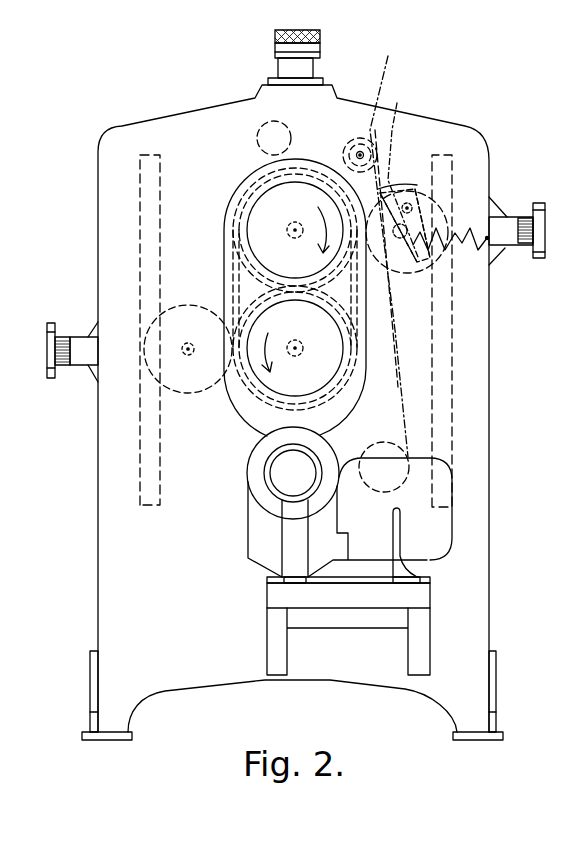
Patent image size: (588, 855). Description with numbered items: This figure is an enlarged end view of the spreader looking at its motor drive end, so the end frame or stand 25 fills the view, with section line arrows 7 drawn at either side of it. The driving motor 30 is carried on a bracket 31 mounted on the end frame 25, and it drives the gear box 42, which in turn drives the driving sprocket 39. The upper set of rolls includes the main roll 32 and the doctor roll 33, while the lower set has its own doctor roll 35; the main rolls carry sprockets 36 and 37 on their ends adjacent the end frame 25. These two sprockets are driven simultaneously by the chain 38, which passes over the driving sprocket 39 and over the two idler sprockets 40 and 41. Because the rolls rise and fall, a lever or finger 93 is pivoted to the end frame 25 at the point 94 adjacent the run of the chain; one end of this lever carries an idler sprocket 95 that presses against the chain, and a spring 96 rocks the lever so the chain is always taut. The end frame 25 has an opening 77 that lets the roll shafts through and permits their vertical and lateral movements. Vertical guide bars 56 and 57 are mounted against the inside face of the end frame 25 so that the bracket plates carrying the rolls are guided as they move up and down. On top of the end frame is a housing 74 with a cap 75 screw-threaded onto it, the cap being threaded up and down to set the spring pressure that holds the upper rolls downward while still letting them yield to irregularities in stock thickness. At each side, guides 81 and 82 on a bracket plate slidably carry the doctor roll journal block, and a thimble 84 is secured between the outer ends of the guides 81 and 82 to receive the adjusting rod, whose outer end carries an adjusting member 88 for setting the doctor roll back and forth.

The section line 7- 7 is at (65, 105).
The end frame 25 is at (292, 412).
The driving motor 30 is at (280, 476).
The bracket 31 is at (290, 595).
The main roll 32 is at (250, 173).
The doctor roll 33 is at (413, 183).
The doctor roll 35 is at (173, 392).
The sprocket 36 is at (242, 248).
The sprocket 37 is at (258, 393).
The chain 38 is at (398, 387).
The driving sprocket 39 is at (384, 492).
The idler sprocket 40 is at (268, 128).
The idler sprocket 41 is at (364, 136).
The gear box 42 is at (430, 532).
The guide bar 56 is at (140, 487).
The guide bar 57 is at (452, 437).
The housing 74 is at (305, 70).
The cap 75 is at (322, 45).
The opening 77 is at (232, 283).
The guide 81 is at (497, 257).
The guide 82 is at (500, 203).
The thimble 84 is at (515, 227).
The handwheel 88 is at (540, 260).
The lever 93 is at (403, 171).
The pivot point 94 is at (380, 196).
The idler sprocket 95 is at (391, 248).
The spring 96 is at (465, 258).